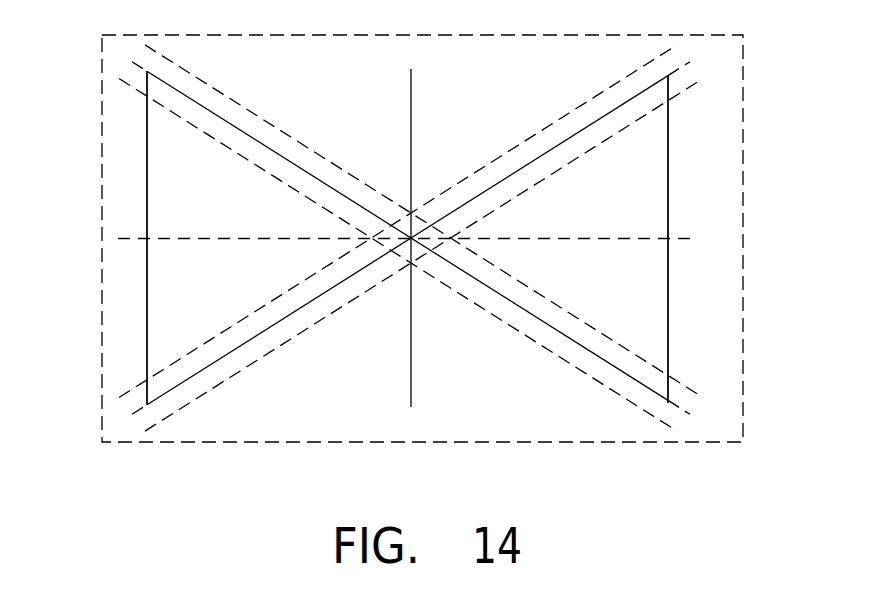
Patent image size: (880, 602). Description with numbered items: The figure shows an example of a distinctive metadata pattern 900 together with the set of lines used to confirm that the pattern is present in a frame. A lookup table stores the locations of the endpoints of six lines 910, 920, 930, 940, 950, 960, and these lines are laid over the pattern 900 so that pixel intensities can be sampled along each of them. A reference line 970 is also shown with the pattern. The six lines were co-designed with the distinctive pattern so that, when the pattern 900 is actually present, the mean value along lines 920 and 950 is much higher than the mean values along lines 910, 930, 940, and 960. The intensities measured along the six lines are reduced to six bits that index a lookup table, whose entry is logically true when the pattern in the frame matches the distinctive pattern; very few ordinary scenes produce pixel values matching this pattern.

The distinctive metadata pattern 900 is at (743, 127).
The line 910 is at (137, 389).
The line 920 is at (140, 414).
The line 930 is at (149, 430).
The line 940 is at (695, 382).
The line 950 is at (687, 411).
The line 960 is at (673, 431).
The reference line 970 is at (640, 239).